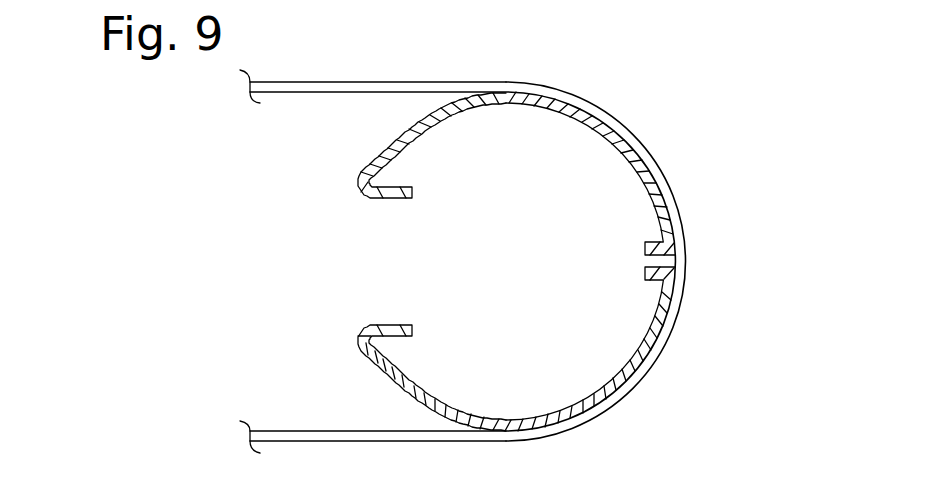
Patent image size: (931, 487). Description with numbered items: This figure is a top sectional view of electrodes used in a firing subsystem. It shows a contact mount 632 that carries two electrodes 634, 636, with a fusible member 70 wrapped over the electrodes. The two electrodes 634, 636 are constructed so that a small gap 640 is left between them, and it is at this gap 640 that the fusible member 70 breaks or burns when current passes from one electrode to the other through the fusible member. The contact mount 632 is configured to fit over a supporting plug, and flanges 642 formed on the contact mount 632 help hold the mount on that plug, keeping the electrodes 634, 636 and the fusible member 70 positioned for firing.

The contact mount 632 is at (648, 88).
The fusible member 70 is at (681, 212).
The electrode 634 is at (371, 165).
The electrode 636 is at (388, 360).
The gap 640 is at (620, 260).
The flanges 642 is at (393, 202).